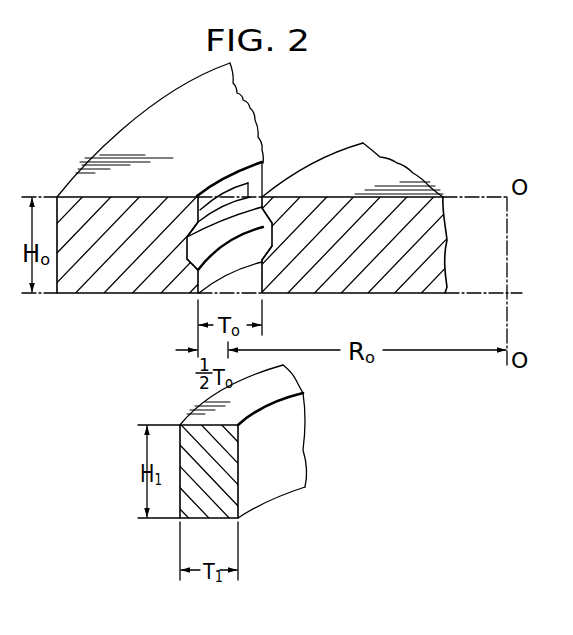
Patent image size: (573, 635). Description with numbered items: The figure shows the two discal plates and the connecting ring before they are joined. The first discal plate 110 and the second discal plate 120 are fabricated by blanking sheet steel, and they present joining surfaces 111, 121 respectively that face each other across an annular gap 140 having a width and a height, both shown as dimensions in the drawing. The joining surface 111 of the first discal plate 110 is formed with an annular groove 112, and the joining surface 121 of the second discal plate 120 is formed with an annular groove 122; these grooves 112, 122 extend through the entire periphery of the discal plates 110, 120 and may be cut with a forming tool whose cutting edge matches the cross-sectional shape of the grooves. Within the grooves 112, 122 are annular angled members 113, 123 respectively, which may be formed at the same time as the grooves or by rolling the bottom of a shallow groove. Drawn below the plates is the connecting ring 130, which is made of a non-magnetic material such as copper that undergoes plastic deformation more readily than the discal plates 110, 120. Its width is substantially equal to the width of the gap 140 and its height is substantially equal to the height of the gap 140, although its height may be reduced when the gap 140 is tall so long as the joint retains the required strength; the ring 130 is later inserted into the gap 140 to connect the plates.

The first discal plate 110 is at (125, 137).
The joining surface 111 is at (263, 161).
The annular groove 112 is at (186, 262).
The annular angled member 113 is at (188, 229).
The second discal plate 120 is at (393, 280).
The joining surface 121 is at (253, 193).
The annular groove 122 is at (273, 267).
The annular angled member 123 is at (274, 236).
The connecting ring 130 is at (282, 485).
The annular gap 140 is at (237, 278).